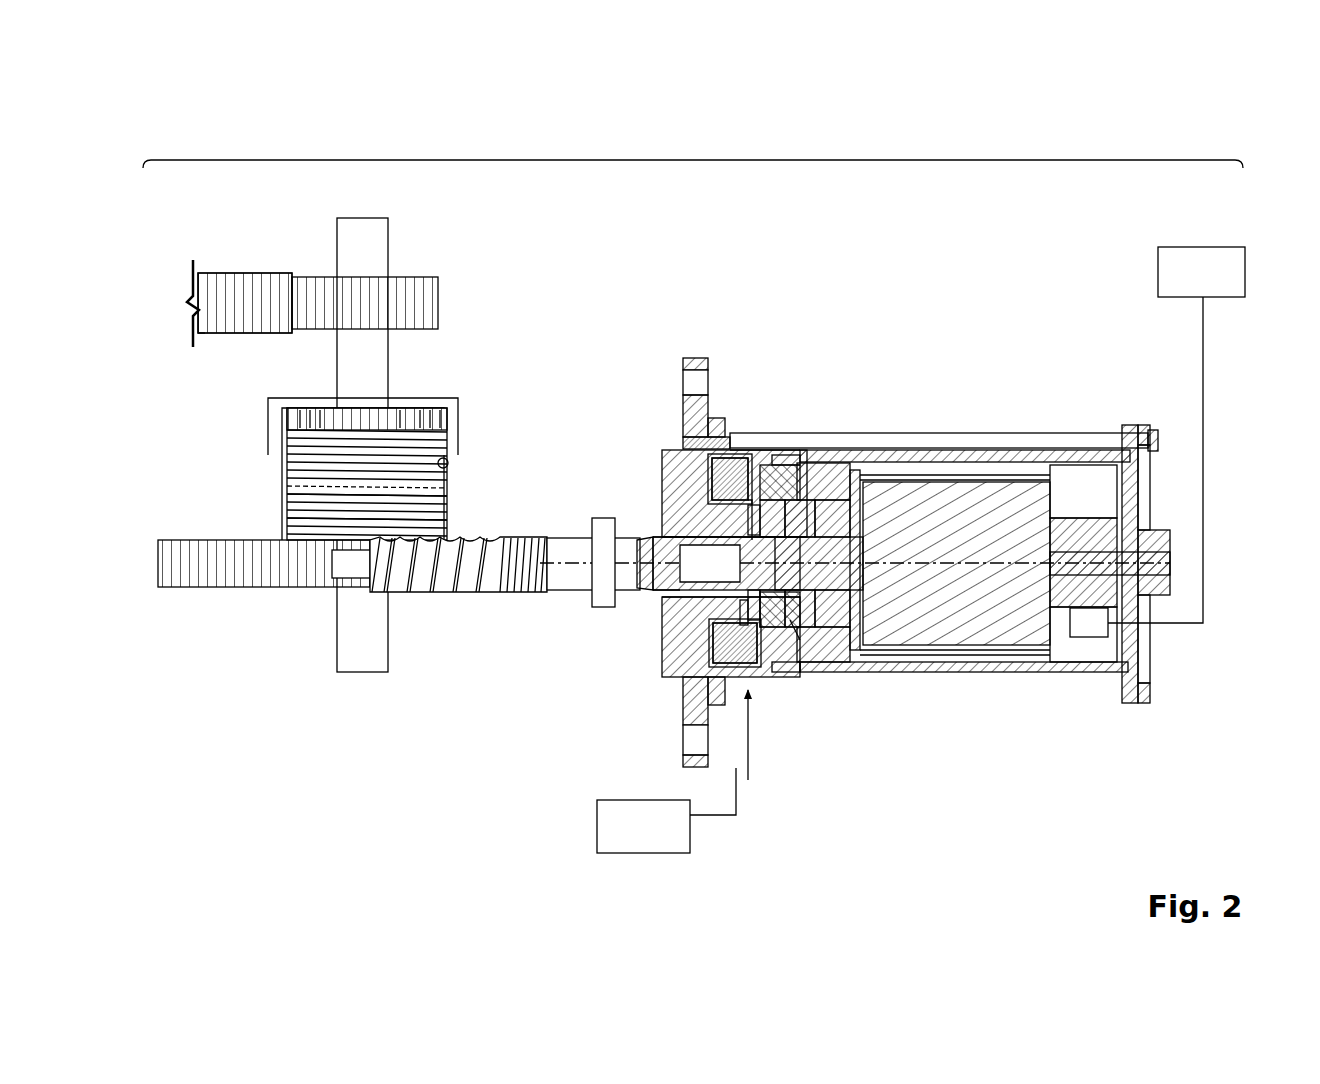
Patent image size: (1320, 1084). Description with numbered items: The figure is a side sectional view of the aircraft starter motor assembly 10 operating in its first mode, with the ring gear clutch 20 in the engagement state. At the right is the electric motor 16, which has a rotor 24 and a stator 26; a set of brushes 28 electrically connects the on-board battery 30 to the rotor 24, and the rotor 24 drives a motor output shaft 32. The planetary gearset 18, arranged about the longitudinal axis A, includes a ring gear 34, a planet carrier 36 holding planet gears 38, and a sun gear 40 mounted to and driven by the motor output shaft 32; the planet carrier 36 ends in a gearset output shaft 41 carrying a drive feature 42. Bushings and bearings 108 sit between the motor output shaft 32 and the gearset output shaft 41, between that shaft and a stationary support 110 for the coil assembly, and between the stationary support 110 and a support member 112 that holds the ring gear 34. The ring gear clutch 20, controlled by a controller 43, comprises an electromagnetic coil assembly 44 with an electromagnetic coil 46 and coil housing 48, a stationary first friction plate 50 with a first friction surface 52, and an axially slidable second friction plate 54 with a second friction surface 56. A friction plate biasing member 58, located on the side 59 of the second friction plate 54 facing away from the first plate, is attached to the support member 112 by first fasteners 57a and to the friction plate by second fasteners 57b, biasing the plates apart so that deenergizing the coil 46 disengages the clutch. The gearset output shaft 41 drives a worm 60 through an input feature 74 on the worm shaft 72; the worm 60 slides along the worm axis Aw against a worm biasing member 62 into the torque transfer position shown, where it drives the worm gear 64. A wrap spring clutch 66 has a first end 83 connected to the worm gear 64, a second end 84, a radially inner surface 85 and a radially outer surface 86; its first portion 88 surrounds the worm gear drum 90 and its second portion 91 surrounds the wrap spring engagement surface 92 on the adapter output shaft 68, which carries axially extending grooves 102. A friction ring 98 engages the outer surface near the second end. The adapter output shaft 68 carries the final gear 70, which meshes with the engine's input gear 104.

The aircraft starter motor assembly 10 is at (695, 160).
The electric motor 16 is at (1000, 400).
The planetary gearset 18 is at (895, 365).
The ring gear clutch 20 is at (752, 300).
The rotor 24 is at (1018, 490).
The stator 26 is at (1018, 672).
The brushes 28 is at (1092, 640).
The on-board battery 30 is at (1158, 270).
The motor output shaft 32 is at (870, 580).
The ring gear 34 is at (845, 452).
The planet carrier 36 is at (818, 452).
The planet gears 38 is at (905, 452).
The sun gear 40 is at (853, 580).
The gearset output shaft 41 is at (748, 450).
The drive feature 42 is at (646, 592).
The controller 43 is at (692, 835).
The electromagnetic coil assembly 44 is at (748, 772).
The electromagnetic coil 46 is at (712, 678).
The electromagnetic coil housing 48 is at (728, 745).
The first friction plate 50 is at (757, 675).
The first friction surface 52 is at (760, 665).
The second friction plate 54 is at (768, 450).
The second friction surface 56 is at (715, 655).
The first fasteners 57a is at (790, 450).
The second fasteners 57b is at (785, 625).
The friction plate biasing member 58 is at (765, 622).
The side of the friction plate 59 is at (783, 450).
The worm 60 is at (420, 593).
The worm biasing member 62 is at (505, 593).
The worm gear 64 is at (266, 531).
The wrap spring clutch 66 is at (266, 458).
The adapter output shaft 68 is at (388, 375).
The final gear 70 is at (438, 303).
The worm shaft 72 is at (350, 580).
The input feature 74 is at (655, 538).
The first end 83 is at (430, 525).
The second end 84 is at (420, 412).
The radially inner surface 85 is at (448, 460).
The radially outer surface 86 is at (445, 492).
The first portion 88 is at (285, 518).
The worm gear drum 90 is at (290, 522).
The second portion 91 is at (283, 485).
The wrap spring engagement surface 92 is at (440, 420).
The friction ring 98 is at (268, 410).
The axially extending grooves 102 is at (325, 418).
The input gear 104 is at (198, 335).
The bushings and bearings 108 is at (650, 545).
The stationary support 110 is at (748, 630).
The support member 112 is at (795, 615).
The longitudinal axis A is at (707, 560).
The worm axis Aw is at (600, 518).